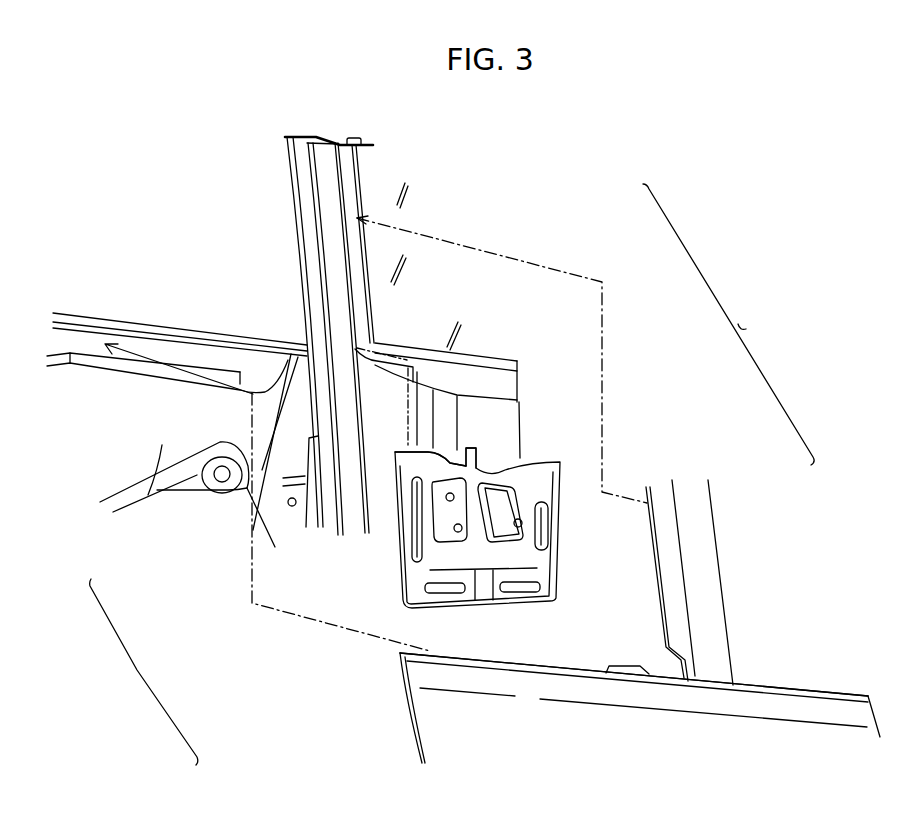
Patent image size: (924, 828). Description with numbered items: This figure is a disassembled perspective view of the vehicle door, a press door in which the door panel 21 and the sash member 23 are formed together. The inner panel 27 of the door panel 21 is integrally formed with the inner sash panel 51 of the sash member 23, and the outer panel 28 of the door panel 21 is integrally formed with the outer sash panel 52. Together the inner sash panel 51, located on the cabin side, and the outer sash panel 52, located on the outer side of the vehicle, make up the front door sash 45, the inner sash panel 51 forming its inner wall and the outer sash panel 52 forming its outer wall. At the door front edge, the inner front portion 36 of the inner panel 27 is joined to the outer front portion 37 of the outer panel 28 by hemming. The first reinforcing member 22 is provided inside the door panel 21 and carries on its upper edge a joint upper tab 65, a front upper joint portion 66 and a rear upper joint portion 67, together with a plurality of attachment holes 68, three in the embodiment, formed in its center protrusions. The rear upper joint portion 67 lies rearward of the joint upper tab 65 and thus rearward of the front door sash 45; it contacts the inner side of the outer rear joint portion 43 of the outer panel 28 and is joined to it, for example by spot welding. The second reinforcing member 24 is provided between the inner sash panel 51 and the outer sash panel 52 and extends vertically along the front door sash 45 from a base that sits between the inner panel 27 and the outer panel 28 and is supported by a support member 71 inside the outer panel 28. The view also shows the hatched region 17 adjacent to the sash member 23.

The front pillar outer panel 17 is at (430, 207).
The door panel 21 is at (260, 579).
The first reinforcing member 22 is at (413, 548).
The sash member 23 is at (728, 324).
The second reinforcing member 24 is at (308, 208).
The inner panel 27 is at (148, 495).
The outer panel 28 is at (541, 691).
The inner front portion 36 is at (405, 347).
The outer front portion 37 is at (763, 688).
The outer rear joint portion 43 is at (630, 672).
The front door sash 45 is at (728, 324).
The inner sash panel 51 is at (363, 268).
The outer sash panel 52 is at (700, 518).
The joint upper tab 65 is at (477, 458).
The front upper joint portion 66 is at (478, 507).
The rear upper joint portion 67 is at (417, 457).
The attachment holes 68 is at (461, 531).
The support member 71 is at (450, 413).